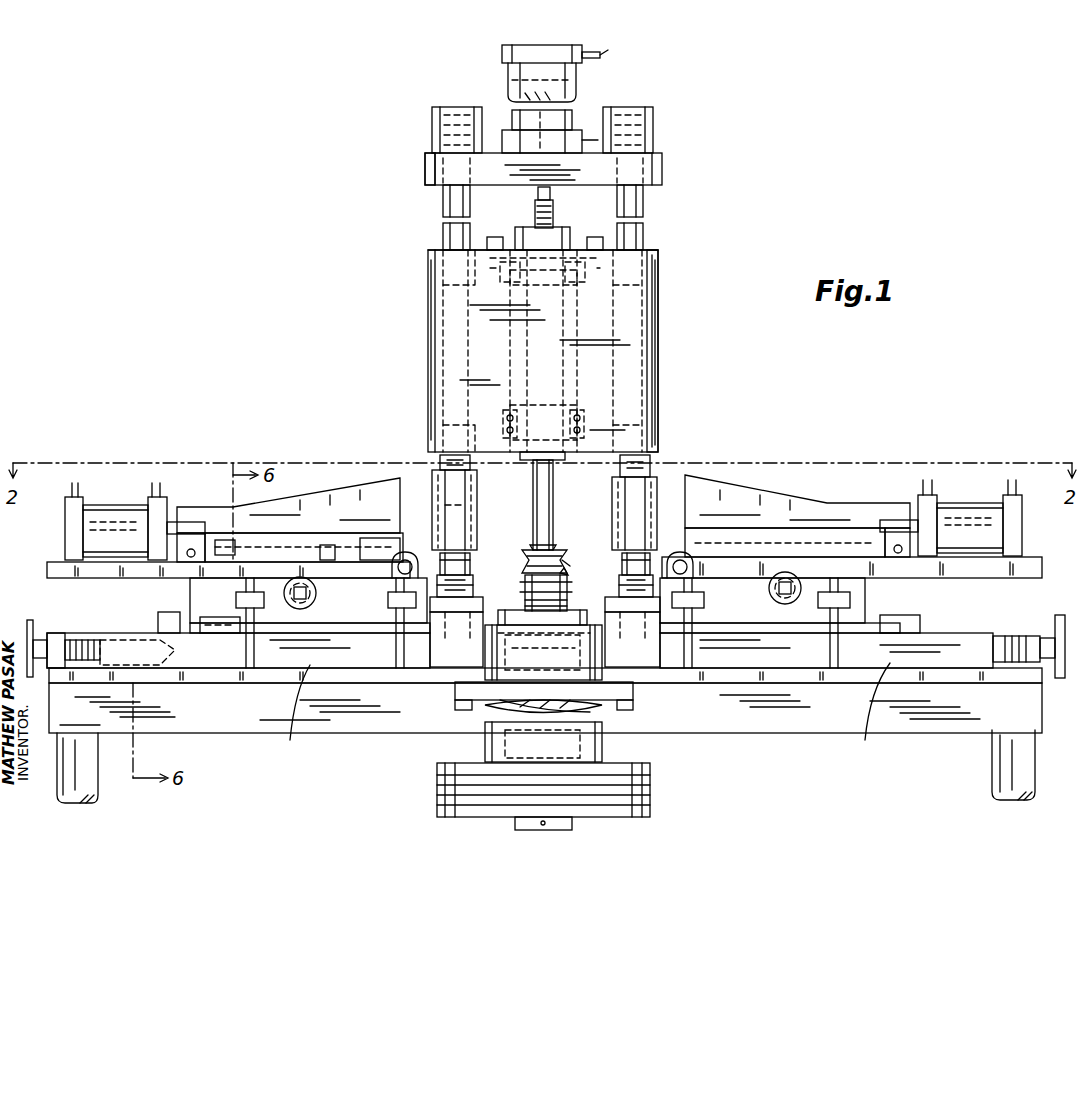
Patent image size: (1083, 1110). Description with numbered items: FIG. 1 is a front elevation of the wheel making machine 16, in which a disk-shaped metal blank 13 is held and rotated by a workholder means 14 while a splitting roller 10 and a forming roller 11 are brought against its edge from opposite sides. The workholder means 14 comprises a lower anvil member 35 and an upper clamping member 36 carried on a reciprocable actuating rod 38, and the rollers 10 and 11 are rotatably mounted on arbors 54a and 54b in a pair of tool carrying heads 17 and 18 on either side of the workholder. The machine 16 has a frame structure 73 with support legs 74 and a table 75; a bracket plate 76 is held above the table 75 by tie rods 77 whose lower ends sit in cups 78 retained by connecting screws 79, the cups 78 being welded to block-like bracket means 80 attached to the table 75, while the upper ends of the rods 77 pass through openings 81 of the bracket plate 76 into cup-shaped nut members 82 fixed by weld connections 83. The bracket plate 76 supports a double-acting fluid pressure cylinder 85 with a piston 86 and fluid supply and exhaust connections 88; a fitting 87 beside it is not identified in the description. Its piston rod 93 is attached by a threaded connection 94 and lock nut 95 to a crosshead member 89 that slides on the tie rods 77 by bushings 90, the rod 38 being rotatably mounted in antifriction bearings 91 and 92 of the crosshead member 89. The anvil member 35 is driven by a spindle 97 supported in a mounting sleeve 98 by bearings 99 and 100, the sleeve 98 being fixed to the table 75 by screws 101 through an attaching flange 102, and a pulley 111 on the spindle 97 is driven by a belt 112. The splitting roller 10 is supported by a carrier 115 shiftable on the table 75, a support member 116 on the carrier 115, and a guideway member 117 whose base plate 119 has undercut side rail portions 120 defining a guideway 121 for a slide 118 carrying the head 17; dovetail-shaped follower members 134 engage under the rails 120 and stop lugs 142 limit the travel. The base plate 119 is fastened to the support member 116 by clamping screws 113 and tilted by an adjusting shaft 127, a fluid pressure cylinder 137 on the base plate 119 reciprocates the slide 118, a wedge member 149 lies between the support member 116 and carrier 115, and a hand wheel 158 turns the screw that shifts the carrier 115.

The fluid pressure cylinder 85 is at (508, 72).
The piston 86 is at (510, 80).
The fitting 87 is at (603, 54).
The fluid supply and exhaust connections 88 is at (592, 140).
The cup-shaped nut members 82 is at (432, 125).
The weld connections 83 is at (440, 145).
The openings 81 is at (425, 165).
The bracket plate 76 is at (662, 168).
The piston rod 93 is at (538, 194).
The lock nut 95 is at (553, 215).
The threaded connection 94 is at (570, 230).
The tie rods 77 is at (443, 236).
The wheel making machine 16 is at (420, 327).
The crosshead member 89 is at (658, 325).
The bushings 90 is at (658, 252).
The antifriction bearing 91 is at (582, 290).
The antifriction bearing 92 is at (585, 405).
The shaft or arbor 54a is at (418, 500).
The shaft or arbor 54b is at (645, 503).
The tool carrying head 17 is at (475, 505).
The tool carrying head 18 is at (612, 510).
The actuating rod 38 is at (548, 495).
The clamping member 36 is at (525, 555).
The workholder means 14 is at (558, 550).
The forming roller 11 is at (572, 565).
The metal blank 13 is at (568, 572).
The anvil member 35 is at (560, 585).
The cups 78 is at (470, 560).
The splitting roller 10 is at (480, 590).
The bracket means 80 is at (483, 612).
The connecting screws 79 is at (476, 625).
The bearing 99 is at (543, 645).
The table 75 is at (220, 680).
The frame structure 73 is at (255, 733).
The carrier 115 is at (592, 709).
The attaching flange 102 is at (455, 695).
The screws 101 is at (455, 705).
The spindle 97 is at (605, 710).
The mounting sleeve 98 is at (485, 740).
The bearing 100 is at (600, 745).
The belt 112 is at (650, 780).
The pulley 111 is at (650, 808).
The support legs 74 is at (98, 785).
The hand wheel 158 is at (30, 620).
The fluid pressure cylinder 137 is at (125, 480).
The base plate 119 is at (125, 580).
The guideway member 117 is at (186, 586).
The slide 118 is at (295, 504).
The side rail portions 120 is at (265, 540).
The stop lugs 142 is at (230, 540).
The connecting and clamping screws 113 is at (328, 545).
The follower members 134 is at (383, 538).
The guideway 121 is at (406, 552).
The support member 116 is at (334, 630).
The adjusting shaft 127 is at (542, 591).
The wedge member 149 is at (240, 632).